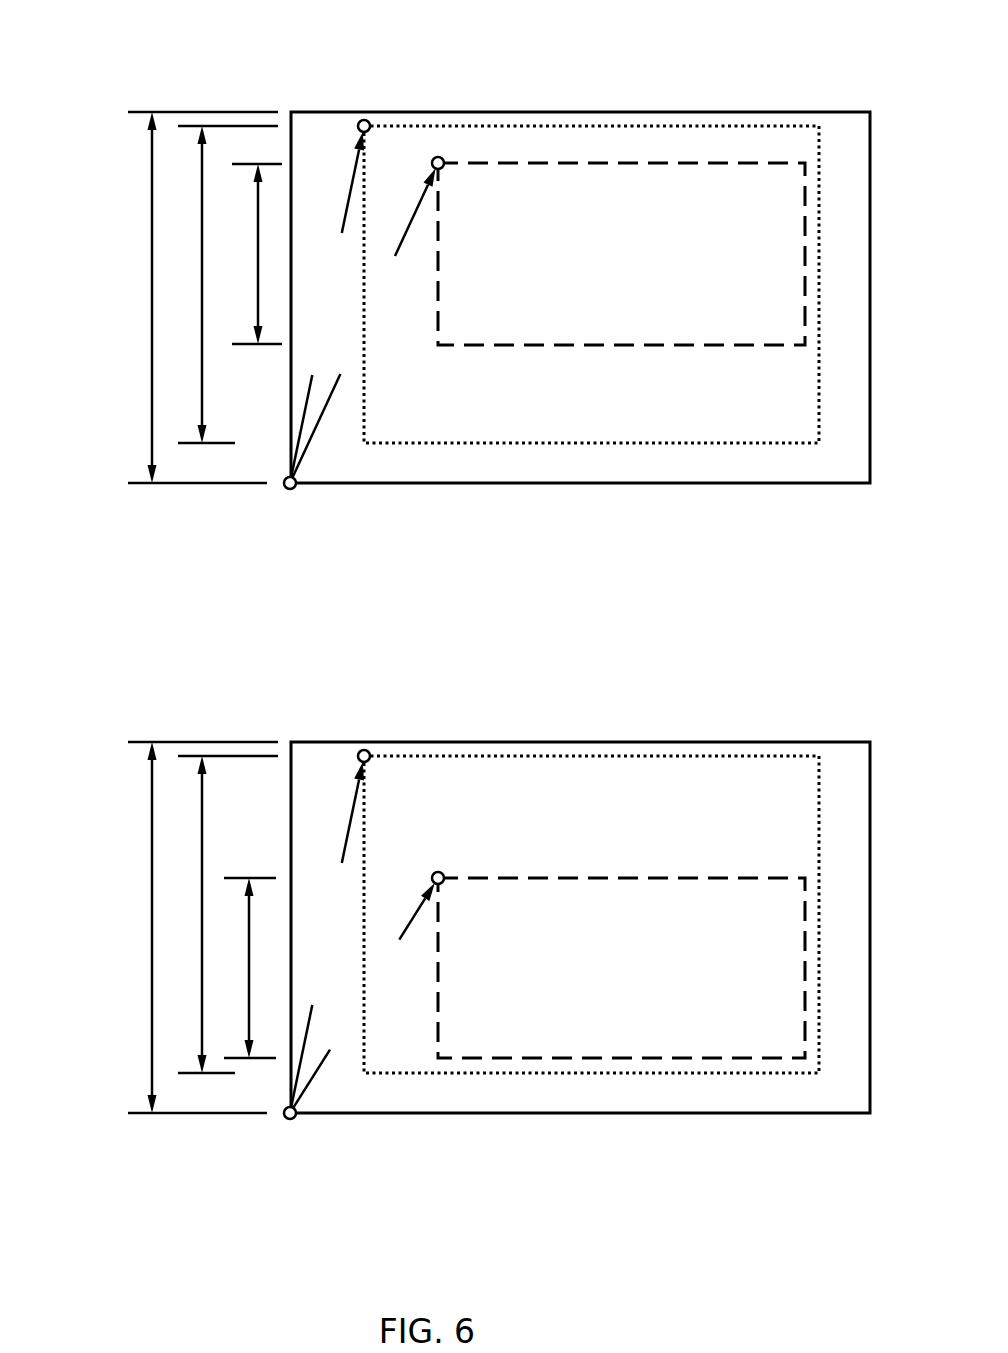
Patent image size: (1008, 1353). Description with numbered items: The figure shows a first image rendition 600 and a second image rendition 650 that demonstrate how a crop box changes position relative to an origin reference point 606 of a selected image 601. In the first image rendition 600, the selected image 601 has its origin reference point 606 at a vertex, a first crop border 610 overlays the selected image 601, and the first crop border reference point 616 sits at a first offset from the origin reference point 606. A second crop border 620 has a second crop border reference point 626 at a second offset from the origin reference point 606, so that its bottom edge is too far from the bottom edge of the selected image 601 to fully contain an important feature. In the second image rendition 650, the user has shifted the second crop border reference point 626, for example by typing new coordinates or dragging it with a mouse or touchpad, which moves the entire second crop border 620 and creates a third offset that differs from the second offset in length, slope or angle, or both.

The first image rendition 600 is at (141, 77).
The second image rendition 650 is at (139, 682).
The selected image 601 is at (559, 474).
The first crop border 610 is at (566, 154).
The second crop border 620 is at (568, 267).
The origin reference point 606 is at (278, 506).
The first crop border reference point 616 is at (364, 101).
The second crop border reference point 626 is at (429, 140).